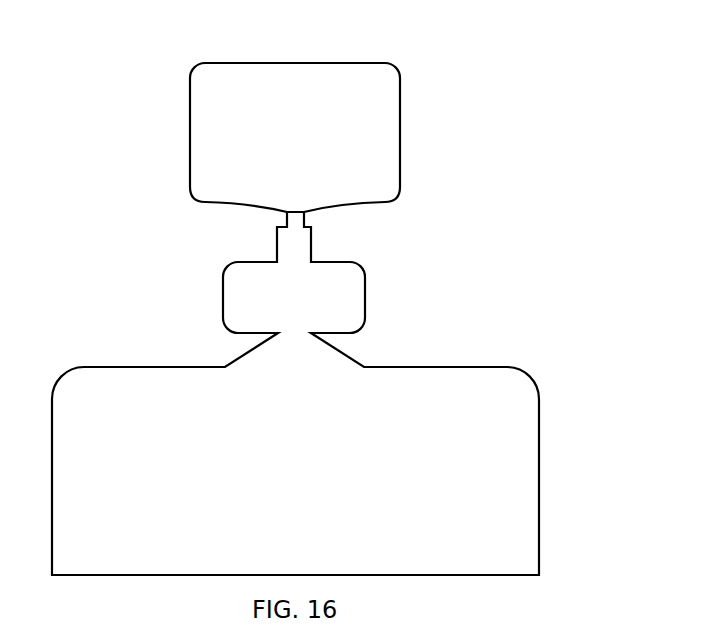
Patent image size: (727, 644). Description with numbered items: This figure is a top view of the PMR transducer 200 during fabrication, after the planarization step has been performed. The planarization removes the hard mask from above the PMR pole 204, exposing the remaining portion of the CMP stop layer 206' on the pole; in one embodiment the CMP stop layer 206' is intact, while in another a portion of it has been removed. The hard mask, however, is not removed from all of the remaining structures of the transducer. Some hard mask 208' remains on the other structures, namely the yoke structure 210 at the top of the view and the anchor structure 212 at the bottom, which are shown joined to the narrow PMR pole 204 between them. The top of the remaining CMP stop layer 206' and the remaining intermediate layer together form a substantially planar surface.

The PMR transducer 200 is at (273, 48).
The PMR pole 204 is at (340, 222).
The CMP stop layer 206' is at (230, 239).
The hard mask 208' is at (295, 319).
The yoke structure 210 is at (470, 128).
The anchor structure 212 is at (573, 453).